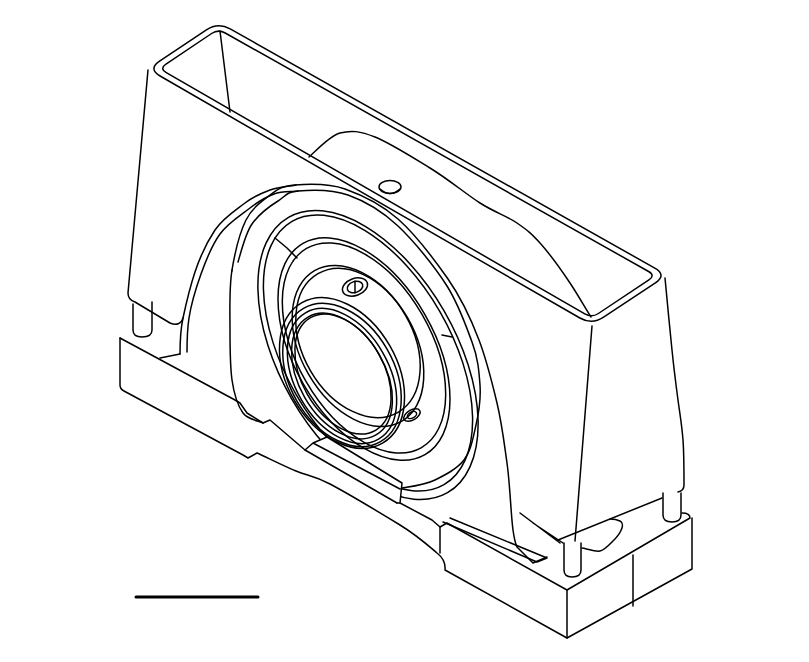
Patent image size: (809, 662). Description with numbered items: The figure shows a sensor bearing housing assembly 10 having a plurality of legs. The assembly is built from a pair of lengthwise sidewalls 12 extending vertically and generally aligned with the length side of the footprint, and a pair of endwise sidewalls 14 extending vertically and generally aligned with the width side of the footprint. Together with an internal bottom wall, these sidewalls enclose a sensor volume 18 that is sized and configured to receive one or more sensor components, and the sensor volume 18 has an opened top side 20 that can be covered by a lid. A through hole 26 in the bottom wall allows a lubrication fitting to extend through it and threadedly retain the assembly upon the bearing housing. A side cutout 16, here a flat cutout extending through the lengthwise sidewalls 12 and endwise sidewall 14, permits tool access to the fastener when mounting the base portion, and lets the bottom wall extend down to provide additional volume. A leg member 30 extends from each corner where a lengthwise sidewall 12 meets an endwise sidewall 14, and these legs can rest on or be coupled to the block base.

The sensor bearing housing assembly 10 is at (612, 107).
The lengthwise sidewalls 12 is at (333, 73).
The endwise sidewalls 14 is at (172, 47).
The side cutout 16 is at (647, 535).
The sensor volume 18 is at (288, 118).
The opened top side 20 is at (243, 75).
The through hole 26 is at (400, 180).
The leg members 30 is at (132, 308).